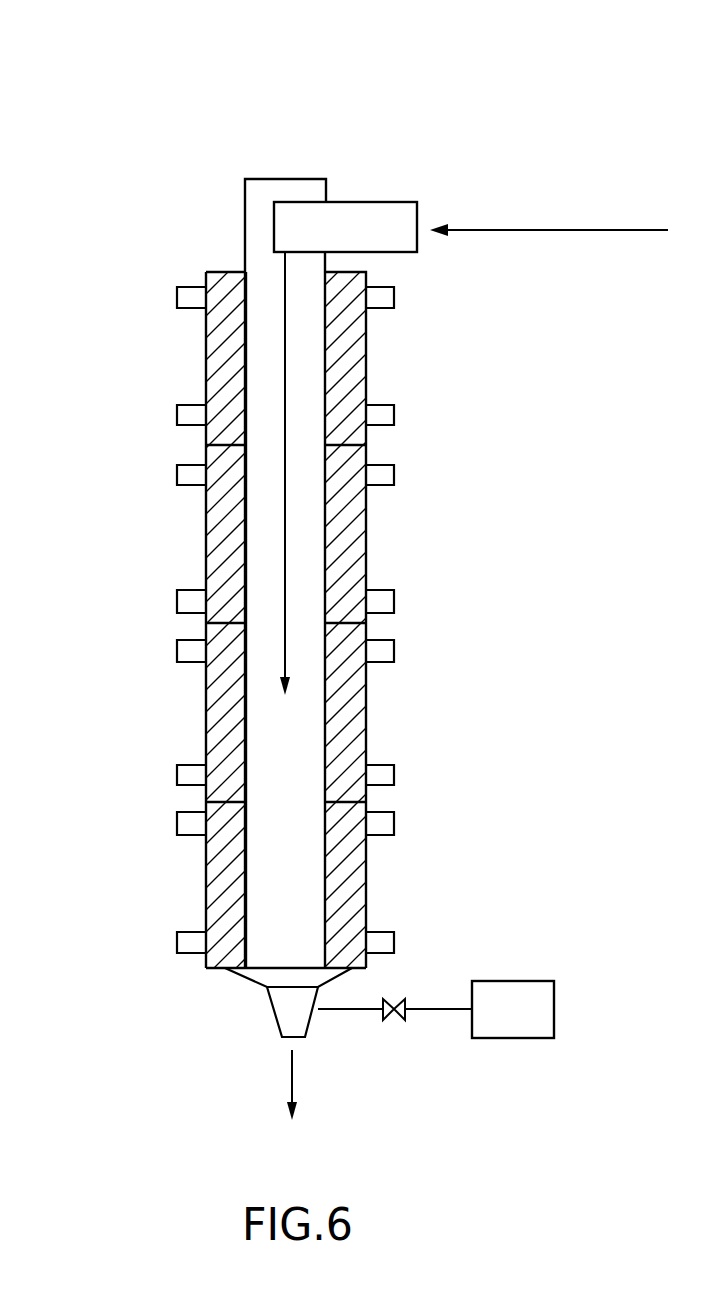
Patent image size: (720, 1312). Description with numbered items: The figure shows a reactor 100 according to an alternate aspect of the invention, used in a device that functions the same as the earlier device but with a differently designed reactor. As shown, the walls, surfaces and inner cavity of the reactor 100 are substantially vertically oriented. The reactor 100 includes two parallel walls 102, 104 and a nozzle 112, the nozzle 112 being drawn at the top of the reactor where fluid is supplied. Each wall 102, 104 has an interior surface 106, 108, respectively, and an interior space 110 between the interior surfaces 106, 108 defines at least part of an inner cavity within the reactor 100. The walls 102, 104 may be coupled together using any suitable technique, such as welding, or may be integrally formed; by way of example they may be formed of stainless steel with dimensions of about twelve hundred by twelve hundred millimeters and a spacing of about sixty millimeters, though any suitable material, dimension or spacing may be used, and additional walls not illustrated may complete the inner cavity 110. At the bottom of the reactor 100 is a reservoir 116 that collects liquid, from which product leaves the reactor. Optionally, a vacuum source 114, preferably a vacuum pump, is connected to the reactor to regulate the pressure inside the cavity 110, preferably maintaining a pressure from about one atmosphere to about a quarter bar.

The reactor 100 is at (76, 93).
The wall 102 is at (206, 880).
The wall 104 is at (366, 886).
The interior surface 106 is at (250, 723).
The interior surface 108 is at (323, 738).
The interior space 110 is at (265, 290).
The nozzle 112 is at (417, 246).
The vacuum source 114 is at (554, 1017).
The reservoir 116 is at (248, 983).